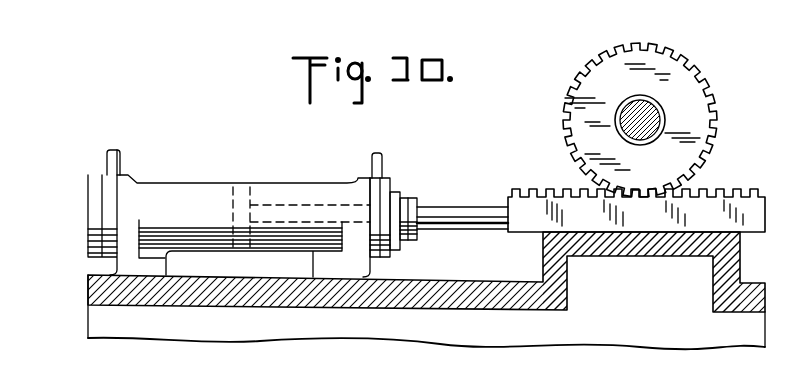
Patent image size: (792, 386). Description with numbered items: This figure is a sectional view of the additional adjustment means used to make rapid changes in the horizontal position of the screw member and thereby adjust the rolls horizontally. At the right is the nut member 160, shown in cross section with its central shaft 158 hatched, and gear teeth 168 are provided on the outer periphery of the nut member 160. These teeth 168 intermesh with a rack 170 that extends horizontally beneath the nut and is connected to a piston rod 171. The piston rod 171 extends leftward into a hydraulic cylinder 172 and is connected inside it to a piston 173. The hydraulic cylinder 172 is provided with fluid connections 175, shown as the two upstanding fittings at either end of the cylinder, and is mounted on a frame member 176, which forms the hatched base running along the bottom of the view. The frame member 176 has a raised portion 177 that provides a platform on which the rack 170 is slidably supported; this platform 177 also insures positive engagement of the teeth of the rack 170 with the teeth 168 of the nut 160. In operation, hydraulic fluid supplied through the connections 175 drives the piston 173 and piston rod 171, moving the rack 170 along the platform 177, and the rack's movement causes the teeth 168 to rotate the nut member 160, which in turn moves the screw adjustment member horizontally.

The shaft 158 is at (664, 120).
The nut member 160 is at (680, 92).
The gear teeth 168 is at (678, 55).
The rack 170 is at (722, 190).
The piston rod 171 is at (463, 211).
The hydraulic cylinder 172 is at (183, 198).
The piston 173 is at (233, 187).
The fluid connections 175 is at (108, 162).
The frame member 176 is at (107, 275).
The raised portion 177 is at (612, 255).